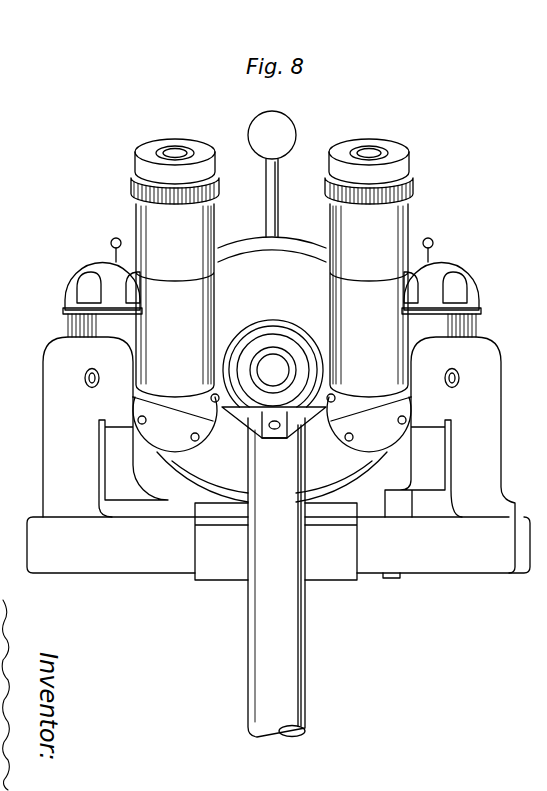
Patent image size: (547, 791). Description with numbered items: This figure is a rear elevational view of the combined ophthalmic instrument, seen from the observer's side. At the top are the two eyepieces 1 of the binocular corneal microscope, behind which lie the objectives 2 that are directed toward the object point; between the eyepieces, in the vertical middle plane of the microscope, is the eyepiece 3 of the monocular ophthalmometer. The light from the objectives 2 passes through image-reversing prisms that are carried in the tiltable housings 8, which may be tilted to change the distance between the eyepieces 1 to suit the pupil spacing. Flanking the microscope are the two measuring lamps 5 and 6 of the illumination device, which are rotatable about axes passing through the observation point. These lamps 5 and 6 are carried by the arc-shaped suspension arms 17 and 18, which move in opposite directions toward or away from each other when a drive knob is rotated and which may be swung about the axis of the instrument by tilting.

The eyepieces 1 is at (178, 158).
The objectives 2 is at (544, 334).
The eyepiece 3 is at (275, 362).
The lamp 5 is at (114, 290).
The lamp 6 is at (431, 293).
The tiltable housings 8 is at (163, 438).
The arc-shaped suspension arm 17 is at (62, 478).
The arc-shaped suspension arm 18 is at (490, 470).